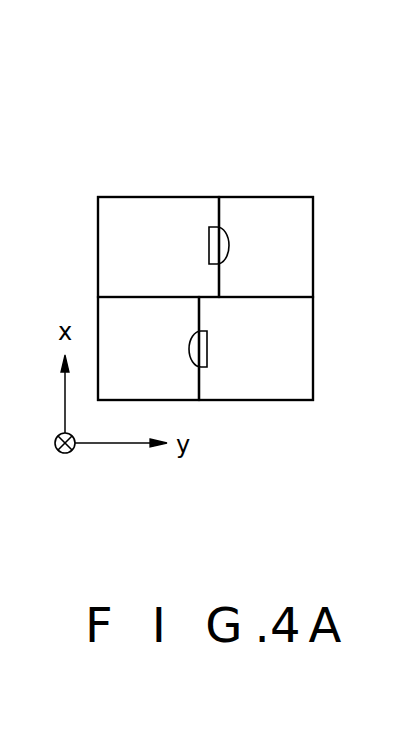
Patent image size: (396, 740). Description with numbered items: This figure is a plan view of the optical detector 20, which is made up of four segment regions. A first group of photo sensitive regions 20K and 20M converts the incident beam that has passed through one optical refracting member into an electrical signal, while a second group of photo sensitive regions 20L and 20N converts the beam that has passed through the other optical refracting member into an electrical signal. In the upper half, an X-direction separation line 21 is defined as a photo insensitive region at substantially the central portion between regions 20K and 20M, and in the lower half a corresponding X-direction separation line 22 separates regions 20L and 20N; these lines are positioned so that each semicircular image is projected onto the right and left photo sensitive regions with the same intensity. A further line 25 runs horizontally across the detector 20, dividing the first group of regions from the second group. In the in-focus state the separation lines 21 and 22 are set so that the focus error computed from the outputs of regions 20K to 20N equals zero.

The optical detector 20 is at (192, 182).
The photo sensitive region 20K is at (135, 211).
The photo sensitive region 20L is at (131, 377).
The photo sensitive region 20M is at (285, 218).
The photo sensitive region 20N is at (295, 377).
The X-direction separation line 21 is at (222, 202).
The X-direction separation line 22 is at (199, 384).
The horizontal dividing line 25 is at (292, 296).